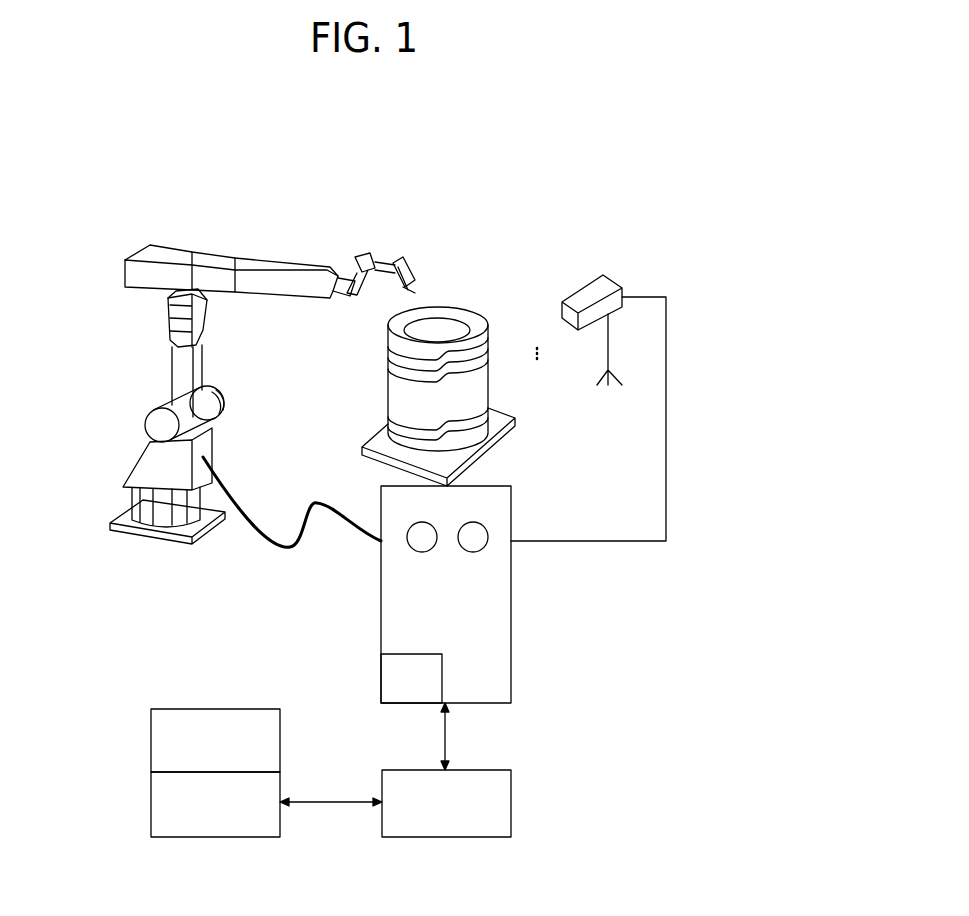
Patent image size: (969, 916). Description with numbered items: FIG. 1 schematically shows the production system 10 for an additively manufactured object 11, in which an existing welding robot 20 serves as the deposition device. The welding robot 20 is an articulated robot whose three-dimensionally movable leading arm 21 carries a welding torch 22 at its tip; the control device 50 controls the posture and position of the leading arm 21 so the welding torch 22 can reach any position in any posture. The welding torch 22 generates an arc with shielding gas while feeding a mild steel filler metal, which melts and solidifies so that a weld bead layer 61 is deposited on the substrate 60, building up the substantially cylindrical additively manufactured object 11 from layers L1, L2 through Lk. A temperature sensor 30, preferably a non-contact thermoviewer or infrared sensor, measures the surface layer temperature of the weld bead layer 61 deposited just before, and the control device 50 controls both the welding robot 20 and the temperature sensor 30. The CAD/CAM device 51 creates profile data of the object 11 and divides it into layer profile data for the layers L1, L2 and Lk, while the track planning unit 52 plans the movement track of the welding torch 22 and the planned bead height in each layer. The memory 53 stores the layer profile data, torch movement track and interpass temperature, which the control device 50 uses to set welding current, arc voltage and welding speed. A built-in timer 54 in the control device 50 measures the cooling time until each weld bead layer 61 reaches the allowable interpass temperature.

The production system 10 is at (513, 173).
The additively manufactured object 11 is at (461, 300).
The welding robot 20 is at (229, 247).
The leading arm 21 is at (363, 253).
The welding torch 22 is at (402, 262).
The temperature sensor 30 is at (619, 276).
The control device 50 is at (512, 650).
The CAD/CAM device 51 is at (150, 742).
The track planning unit 52 is at (150, 808).
The memory 53 is at (512, 806).
The timer 54 is at (390, 663).
The substrate 60 is at (472, 455).
The weld bead layer 61 is at (388, 360).
The layer Lk is at (486, 347).
The layer L2 is at (488, 411).
The layer L1 is at (492, 429).